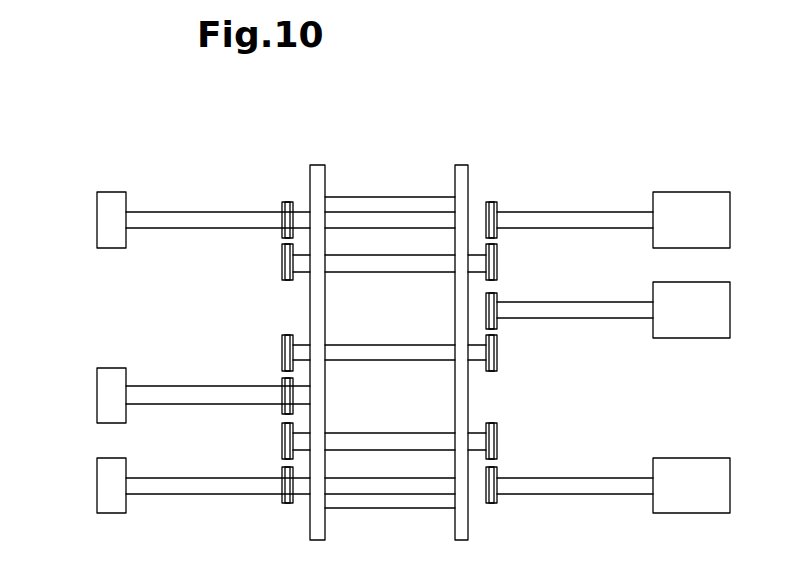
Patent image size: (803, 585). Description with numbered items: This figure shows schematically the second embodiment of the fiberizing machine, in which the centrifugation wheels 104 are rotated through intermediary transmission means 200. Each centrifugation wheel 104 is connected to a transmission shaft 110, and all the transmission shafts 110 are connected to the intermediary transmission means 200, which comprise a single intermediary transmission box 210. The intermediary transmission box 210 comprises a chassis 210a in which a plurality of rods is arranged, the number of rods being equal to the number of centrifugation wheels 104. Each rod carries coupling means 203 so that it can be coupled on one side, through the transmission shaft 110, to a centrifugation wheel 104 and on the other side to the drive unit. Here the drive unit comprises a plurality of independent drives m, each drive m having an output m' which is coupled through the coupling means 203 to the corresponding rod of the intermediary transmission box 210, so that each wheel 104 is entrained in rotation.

The centrifugation wheel 104 is at (110, 191).
The transmission shaft 110 is at (208, 495).
The intermediary transmission means 200 is at (438, 290).
The coupling means 203 is at (282, 241).
The intermediary transmission box 210 is at (387, 154).
The chassis 210a is at (477, 111).
The drive m is at (691, 352).
The output m' is at (575, 386).